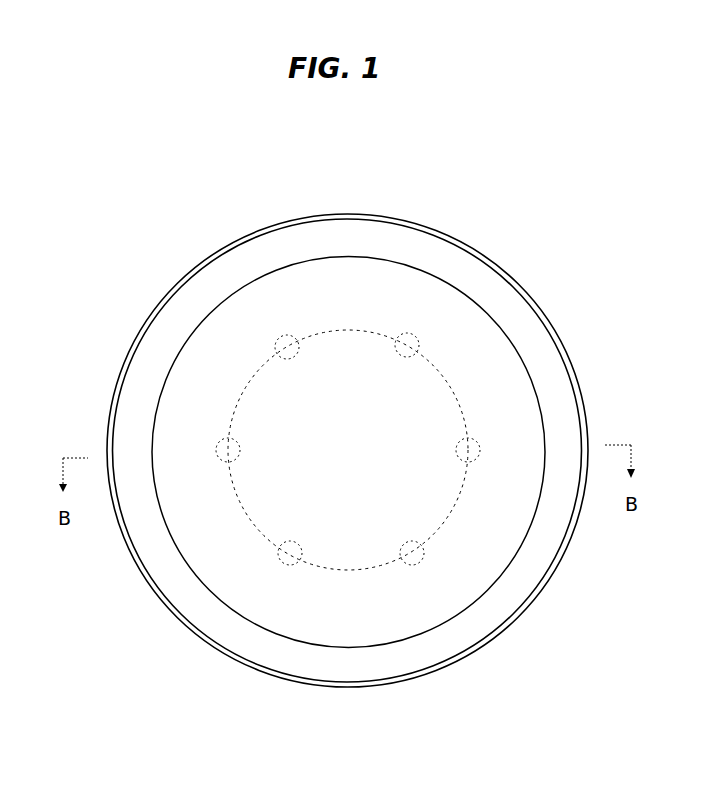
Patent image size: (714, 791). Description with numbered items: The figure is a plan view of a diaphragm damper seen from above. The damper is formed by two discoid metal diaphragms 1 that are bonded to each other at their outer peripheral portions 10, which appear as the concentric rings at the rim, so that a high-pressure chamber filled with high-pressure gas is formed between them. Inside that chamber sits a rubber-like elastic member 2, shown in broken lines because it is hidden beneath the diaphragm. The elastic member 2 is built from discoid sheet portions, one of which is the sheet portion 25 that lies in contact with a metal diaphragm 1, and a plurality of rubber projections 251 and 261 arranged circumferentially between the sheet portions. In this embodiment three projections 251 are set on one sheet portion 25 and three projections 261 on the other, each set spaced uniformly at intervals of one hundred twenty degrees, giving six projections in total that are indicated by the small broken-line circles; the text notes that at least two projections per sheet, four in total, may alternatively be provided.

The discoid metal diaphragm 1 is at (373, 273).
The outer peripheral portion 10 is at (520, 280).
The rubber-like elastic member 2 is at (392, 483).
The sheet portion 25 is at (362, 567).
The rubber projection 251 is at (283, 335).
The rubber projection 261 is at (410, 333).